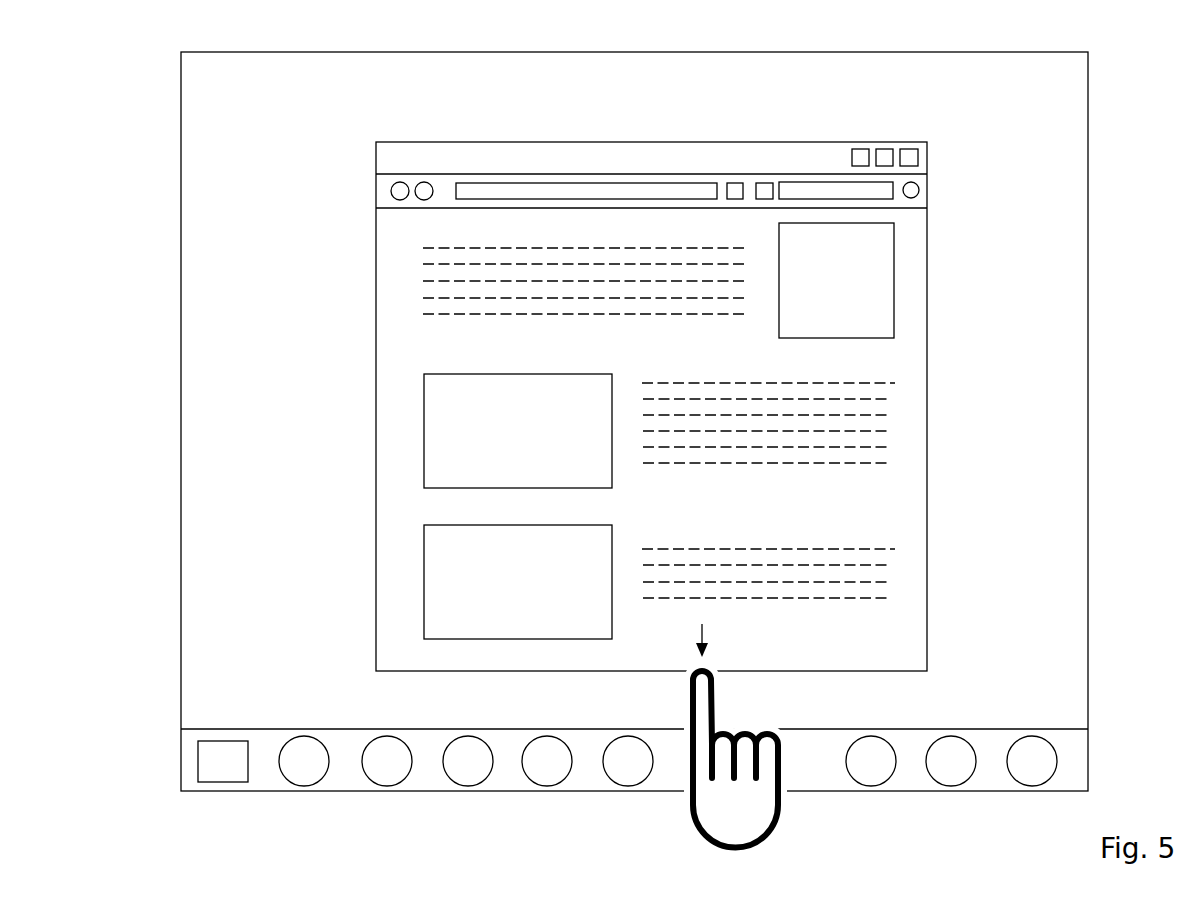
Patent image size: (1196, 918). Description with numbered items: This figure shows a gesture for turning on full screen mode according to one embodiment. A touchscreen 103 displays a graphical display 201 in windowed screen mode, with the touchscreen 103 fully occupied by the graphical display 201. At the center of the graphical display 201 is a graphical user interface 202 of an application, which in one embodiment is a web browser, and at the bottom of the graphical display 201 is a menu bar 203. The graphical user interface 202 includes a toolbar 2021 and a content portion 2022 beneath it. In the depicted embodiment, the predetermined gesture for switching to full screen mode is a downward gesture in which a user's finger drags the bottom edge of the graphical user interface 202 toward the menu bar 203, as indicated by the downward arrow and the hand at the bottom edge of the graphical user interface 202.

The touchscreen 103 is at (245, 52).
The graphical display 201 is at (1056, 483).
The graphical user interface 202 is at (828, 141).
The toolbar 2021 is at (376, 142).
The content portion 2022 is at (376, 208).
The menu bar 203 is at (263, 729).